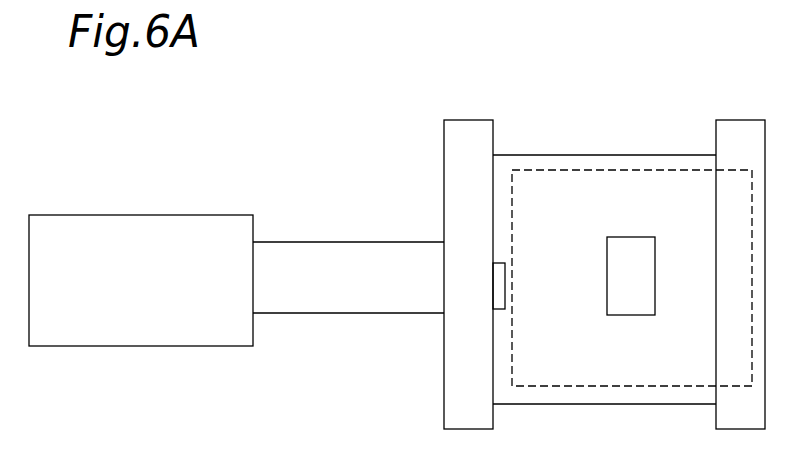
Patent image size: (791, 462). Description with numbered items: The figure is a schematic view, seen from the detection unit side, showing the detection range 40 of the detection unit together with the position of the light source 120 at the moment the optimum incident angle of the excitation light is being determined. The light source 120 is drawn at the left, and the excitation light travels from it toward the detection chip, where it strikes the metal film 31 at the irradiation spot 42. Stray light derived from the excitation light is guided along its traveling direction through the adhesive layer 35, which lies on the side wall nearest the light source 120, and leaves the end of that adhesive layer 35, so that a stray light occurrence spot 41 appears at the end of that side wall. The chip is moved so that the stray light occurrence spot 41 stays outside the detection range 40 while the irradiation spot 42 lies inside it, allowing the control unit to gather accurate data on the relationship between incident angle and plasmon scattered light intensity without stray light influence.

The light source 120 is at (148, 215).
The adhesive layer 35 is at (742, 120).
The metal film 31 is at (554, 155).
The detection range 40 is at (635, 170).
The stray light occurrence spot 41 is at (500, 265).
The irradiation spot 42 is at (630, 268).